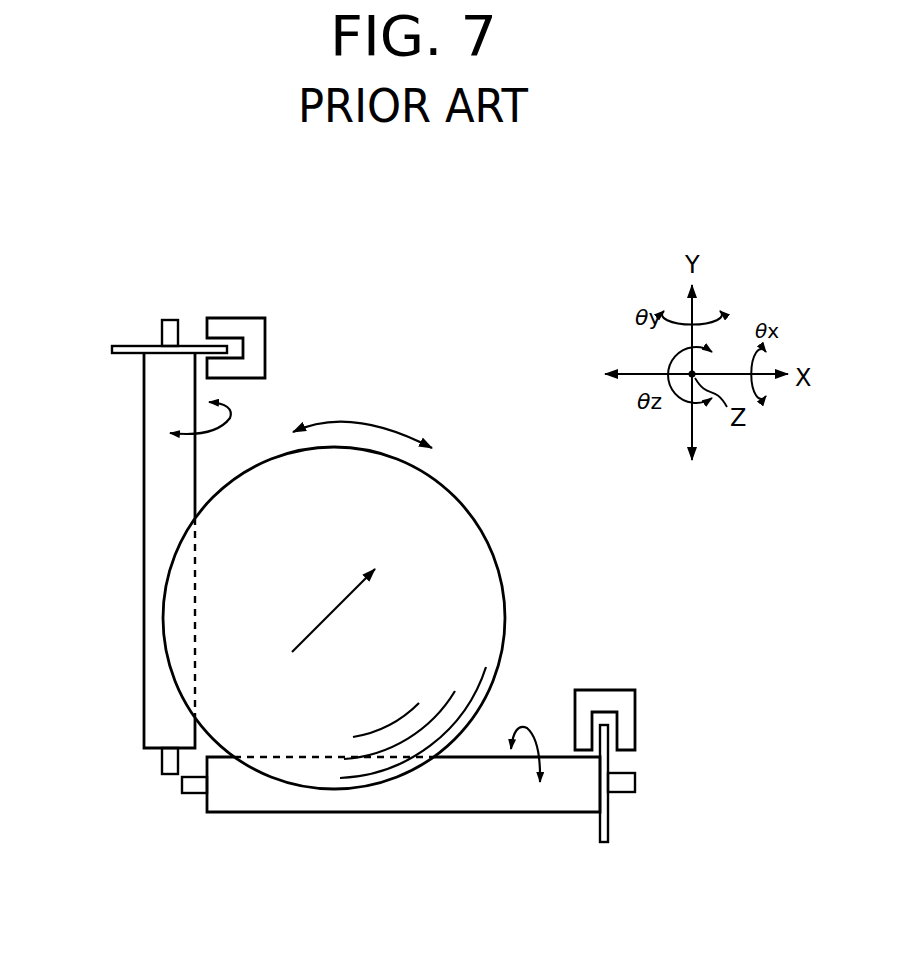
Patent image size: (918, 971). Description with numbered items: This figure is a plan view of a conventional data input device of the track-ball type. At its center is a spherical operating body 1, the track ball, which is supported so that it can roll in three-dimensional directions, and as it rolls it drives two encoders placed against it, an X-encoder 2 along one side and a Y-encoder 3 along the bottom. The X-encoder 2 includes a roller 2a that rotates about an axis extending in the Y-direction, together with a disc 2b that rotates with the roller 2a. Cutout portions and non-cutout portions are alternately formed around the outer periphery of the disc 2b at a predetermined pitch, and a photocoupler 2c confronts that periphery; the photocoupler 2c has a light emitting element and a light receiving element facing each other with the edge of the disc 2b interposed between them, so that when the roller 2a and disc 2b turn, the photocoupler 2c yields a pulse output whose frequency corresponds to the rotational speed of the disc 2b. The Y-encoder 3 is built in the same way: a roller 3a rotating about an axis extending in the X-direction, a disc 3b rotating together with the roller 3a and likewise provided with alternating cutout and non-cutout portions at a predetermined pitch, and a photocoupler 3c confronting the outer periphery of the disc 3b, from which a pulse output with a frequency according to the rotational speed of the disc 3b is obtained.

The spherical operating body (track ball) 1 is at (405, 550).
The X-encoder 2 is at (166, 519).
The roller 2a is at (165, 500).
The disc 2b is at (125, 345).
The photocoupler 2c is at (235, 318).
The Y-encoder 3 is at (452, 811).
The roller 3a is at (347, 802).
The disc 3b is at (610, 828).
The photocoupler 3c is at (633, 725).